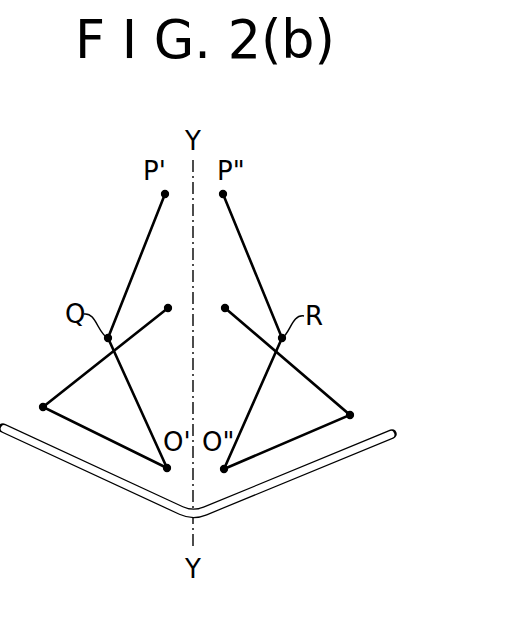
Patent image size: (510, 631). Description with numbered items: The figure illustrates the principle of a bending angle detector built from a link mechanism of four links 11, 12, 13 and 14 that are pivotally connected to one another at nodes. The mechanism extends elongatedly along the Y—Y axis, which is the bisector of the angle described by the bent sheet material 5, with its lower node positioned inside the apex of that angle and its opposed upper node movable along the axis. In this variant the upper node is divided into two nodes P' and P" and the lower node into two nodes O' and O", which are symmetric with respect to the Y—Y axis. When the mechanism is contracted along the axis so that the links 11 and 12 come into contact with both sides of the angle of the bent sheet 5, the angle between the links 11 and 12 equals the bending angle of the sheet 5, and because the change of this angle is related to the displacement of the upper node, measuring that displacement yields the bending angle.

The bent sheet material 5 is at (303, 477).
The link 11 is at (128, 388).
The link 12 is at (265, 385).
The link 13 is at (140, 256).
The link 14 is at (253, 262).